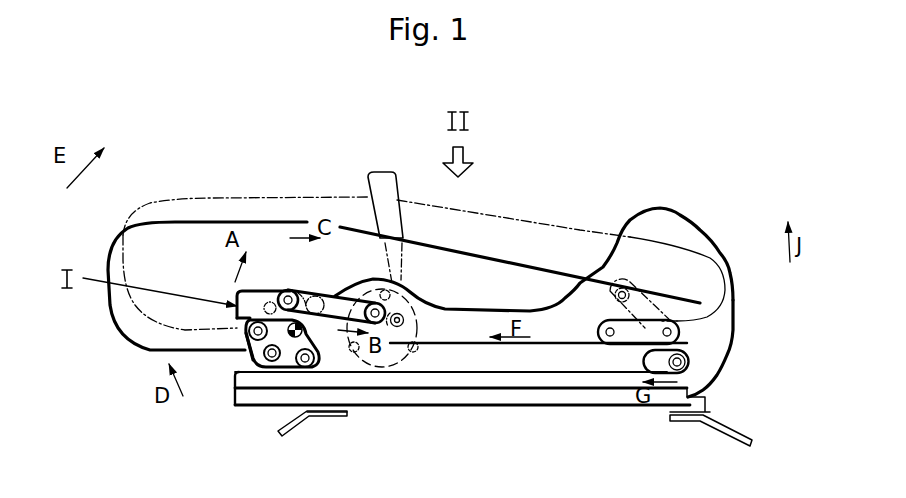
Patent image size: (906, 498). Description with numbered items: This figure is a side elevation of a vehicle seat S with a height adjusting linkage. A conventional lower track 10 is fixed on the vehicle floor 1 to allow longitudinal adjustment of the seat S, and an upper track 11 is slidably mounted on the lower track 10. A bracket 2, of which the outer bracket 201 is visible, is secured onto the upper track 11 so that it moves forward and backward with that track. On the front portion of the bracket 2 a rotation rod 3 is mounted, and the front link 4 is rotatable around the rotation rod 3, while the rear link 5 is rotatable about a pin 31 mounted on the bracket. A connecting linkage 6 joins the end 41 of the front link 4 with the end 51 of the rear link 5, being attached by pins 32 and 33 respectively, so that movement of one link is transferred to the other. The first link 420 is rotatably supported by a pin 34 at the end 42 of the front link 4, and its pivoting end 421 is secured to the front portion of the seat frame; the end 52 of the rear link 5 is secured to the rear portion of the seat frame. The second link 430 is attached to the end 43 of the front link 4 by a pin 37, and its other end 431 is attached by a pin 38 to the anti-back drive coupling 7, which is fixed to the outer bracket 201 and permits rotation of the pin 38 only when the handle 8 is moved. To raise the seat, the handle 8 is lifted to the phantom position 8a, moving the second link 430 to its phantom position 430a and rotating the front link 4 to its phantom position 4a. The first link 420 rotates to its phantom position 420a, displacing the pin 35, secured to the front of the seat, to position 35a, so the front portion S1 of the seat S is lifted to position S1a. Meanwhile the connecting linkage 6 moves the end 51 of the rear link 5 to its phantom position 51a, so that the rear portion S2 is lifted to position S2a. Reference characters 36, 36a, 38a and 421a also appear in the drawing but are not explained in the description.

The vehicle floor 1 is at (283, 434).
The bracket 2 is at (732, 363).
The outer bracket 201 is at (733, 294).
The rotation rod 3 is at (303, 331).
The front link 4 is at (289, 366).
The phantom line position of front link 4a is at (336, 288).
The rear link 5 is at (687, 345).
The connecting linkage 6 is at (533, 355).
The anti-back drive coupling 7 is at (420, 330).
The handle 8 is at (240, 290).
The phantom line position of handle 8a is at (392, 172).
The lower track 10 is at (600, 412).
The upper track 11 is at (505, 390).
The pin 31 is at (677, 328).
The pin 32 is at (317, 374).
The pin 33 is at (687, 366).
The pin 34 is at (252, 366).
The pin 35 is at (250, 333).
The phantom line position of pin 35 35a is at (283, 291).
The rear arm 36 is at (600, 325).
The rear arm pivot 36a is at (622, 287).
The pin 37 is at (291, 291).
The pin 38 is at (375, 303).
The pin 38a is at (405, 318).
The end of front link 41 is at (310, 364).
The end of front link 42 is at (268, 360).
The end of front link 43 is at (325, 290).
The end of rear link 51 is at (677, 376).
The phantom line position of end 51 51a is at (643, 360).
The end of rear link 52 is at (605, 331).
The first link 420 is at (252, 357).
The phantom line position of first link 420a is at (237, 292).
The pivoting end of first link 421 is at (238, 323).
The pin 421a is at (268, 290).
The second link 430 is at (335, 288).
The phantom line position of second link 430a is at (400, 313).
The other end of second link 431 is at (383, 298).
The seat S is at (178, 220).
The front portion of seat S1 is at (128, 223).
The phantom line position of front portion S1a is at (155, 200).
The rear portion of seat S2 is at (707, 300).
The phantom line position of rear portion S2a is at (710, 258).